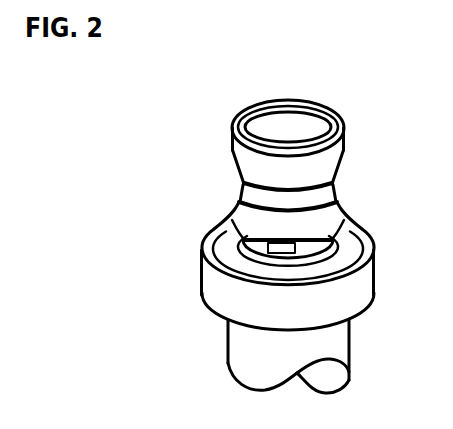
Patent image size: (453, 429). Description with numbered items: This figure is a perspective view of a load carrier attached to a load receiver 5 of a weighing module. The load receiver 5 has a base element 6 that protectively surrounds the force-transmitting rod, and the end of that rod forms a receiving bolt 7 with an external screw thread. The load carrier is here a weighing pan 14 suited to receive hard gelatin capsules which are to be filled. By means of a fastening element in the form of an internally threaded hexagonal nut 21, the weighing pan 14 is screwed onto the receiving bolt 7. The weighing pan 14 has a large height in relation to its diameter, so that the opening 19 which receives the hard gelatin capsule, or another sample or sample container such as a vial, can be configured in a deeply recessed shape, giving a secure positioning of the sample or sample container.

The load receiver 5 is at (217, 127).
The base element 6 is at (220, 275).
The receiving bolt 7 is at (295, 258).
The weighing pan 14 is at (332, 130).
The opening 19 is at (287, 112).
The hexagonal nut 21 is at (300, 248).